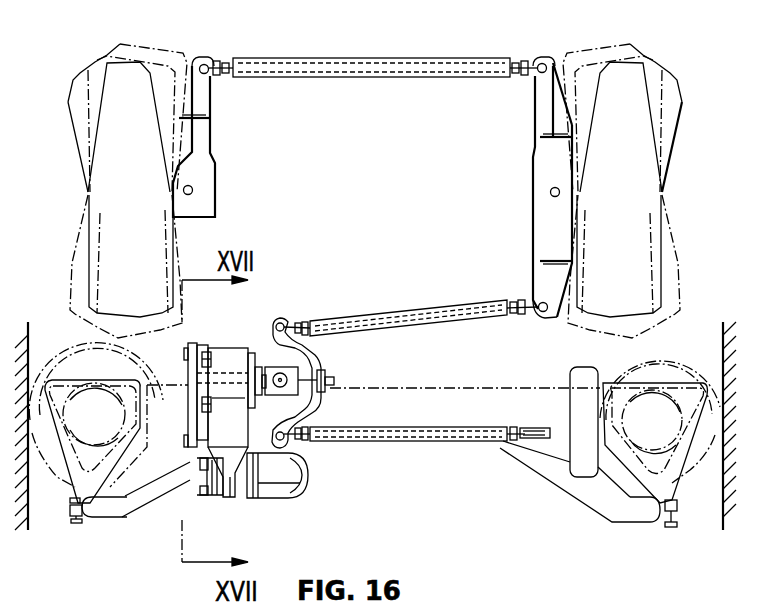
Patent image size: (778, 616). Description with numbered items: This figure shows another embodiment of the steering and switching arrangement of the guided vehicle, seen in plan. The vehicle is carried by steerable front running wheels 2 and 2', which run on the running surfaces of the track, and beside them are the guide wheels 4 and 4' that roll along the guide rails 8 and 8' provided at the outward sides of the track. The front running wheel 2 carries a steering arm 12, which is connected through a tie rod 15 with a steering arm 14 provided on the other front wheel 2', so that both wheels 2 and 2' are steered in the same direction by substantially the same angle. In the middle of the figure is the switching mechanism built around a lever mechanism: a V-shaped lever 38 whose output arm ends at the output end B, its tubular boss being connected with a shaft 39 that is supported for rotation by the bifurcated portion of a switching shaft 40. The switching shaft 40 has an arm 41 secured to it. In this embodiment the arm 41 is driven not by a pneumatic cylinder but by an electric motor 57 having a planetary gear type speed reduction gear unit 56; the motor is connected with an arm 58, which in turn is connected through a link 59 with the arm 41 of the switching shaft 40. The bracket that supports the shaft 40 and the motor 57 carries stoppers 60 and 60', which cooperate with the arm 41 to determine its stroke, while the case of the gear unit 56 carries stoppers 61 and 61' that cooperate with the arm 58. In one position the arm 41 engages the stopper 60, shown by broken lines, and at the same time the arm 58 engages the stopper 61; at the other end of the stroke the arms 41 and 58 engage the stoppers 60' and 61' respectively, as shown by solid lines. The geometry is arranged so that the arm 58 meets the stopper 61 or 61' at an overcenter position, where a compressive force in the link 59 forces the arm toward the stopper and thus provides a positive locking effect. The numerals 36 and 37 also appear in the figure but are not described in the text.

The steerable front running wheel 2 is at (622, 191).
The steerable front running wheel 2' is at (117, 191).
The guide wheel 4 is at (610, 444).
The guide wheel 4' is at (109, 433).
The guide rail 8 is at (714, 425).
The guide rail 8' is at (36, 422).
The steering arm 12 is at (542, 252).
The steering arm 14 is at (210, 137).
The tie rod 15 is at (413, 58).
The lower steering cylinder 36 is at (420, 443).
The upper steering cylinder 37 is at (410, 321).
The V-shaped lever 38 is at (304, 351).
The shaft 39 is at (304, 402).
The switching shaft 40 is at (260, 348).
The arm 41 is at (205, 351).
The planetary gear type speed reduction gear unit 56 is at (230, 498).
The electric motor 57 is at (275, 497).
The arm 58 is at (207, 496).
The link 59 is at (190, 371).
The stopper 60 is at (182, 404).
The stopper 60' is at (208, 365).
The stopper 61 is at (179, 504).
The stopper 61' is at (178, 459).
The output end B is at (282, 319).